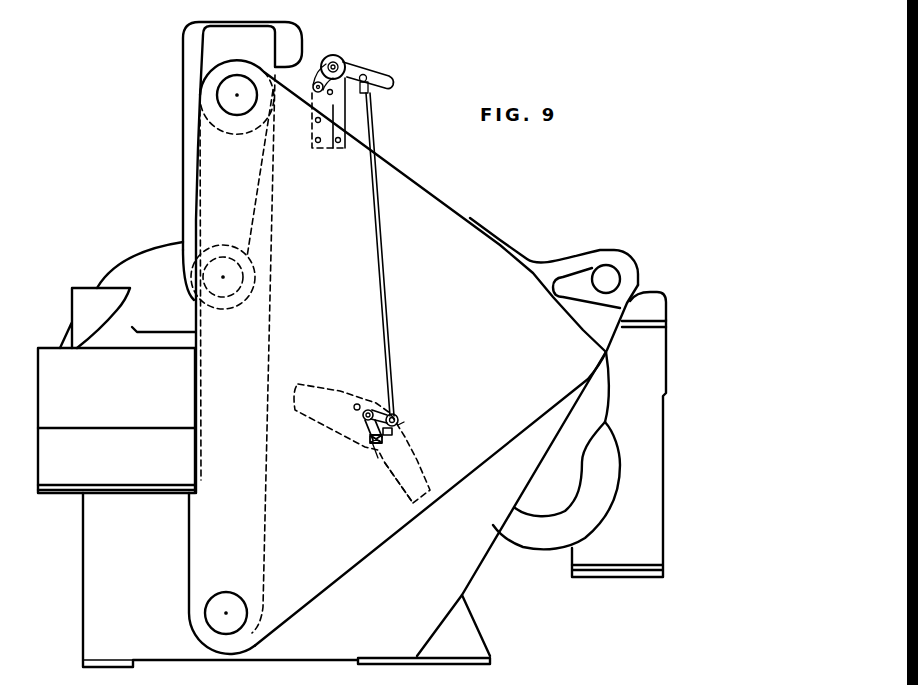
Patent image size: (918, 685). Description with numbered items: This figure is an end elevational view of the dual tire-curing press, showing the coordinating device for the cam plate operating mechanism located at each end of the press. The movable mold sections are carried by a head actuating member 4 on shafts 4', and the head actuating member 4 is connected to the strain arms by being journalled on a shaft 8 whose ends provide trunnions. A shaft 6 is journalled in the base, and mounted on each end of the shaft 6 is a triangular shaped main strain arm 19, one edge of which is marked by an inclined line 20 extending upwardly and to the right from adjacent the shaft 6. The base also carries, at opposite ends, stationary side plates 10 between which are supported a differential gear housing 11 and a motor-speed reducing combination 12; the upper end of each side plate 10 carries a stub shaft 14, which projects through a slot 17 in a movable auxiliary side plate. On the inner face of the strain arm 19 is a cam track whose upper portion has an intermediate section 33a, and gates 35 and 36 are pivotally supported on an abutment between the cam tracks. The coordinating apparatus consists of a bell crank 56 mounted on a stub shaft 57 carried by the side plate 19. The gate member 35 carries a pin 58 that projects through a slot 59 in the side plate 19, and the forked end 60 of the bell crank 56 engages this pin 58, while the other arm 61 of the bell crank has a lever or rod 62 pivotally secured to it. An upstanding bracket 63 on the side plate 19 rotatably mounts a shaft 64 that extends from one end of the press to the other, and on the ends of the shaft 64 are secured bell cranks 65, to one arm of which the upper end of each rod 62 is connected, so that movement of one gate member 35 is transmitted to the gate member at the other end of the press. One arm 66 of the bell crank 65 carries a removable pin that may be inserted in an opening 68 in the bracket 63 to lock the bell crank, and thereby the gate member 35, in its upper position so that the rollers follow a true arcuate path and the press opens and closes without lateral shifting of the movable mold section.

The head actuating member 4 is at (227, 338).
The shaft 8 is at (227, 98).
The shafts 4' is at (188, 259).
The shaft 6 is at (207, 608).
The inclined line 20 is at (192, 378).
The main strain arm 19 is at (405, 193).
The slot 17 is at (571, 283).
The stub shaft 14 is at (610, 273).
The stationary side plates 10 is at (467, 562).
The differential gear housing 11 is at (547, 542).
The motor-speed reducing combination 12 is at (647, 542).
The lever 62 is at (382, 257).
The shaft 64 is at (338, 59).
The arm 66 is at (321, 66).
The bell cranks 65 is at (378, 80).
The opening 68 is at (333, 93).
The bracket 63 is at (328, 124).
The gate 36 is at (353, 405).
The bell crank 56 is at (372, 410).
The arm 61 is at (395, 417).
The intermediate section 33a is at (402, 423).
The stub shaft 57 is at (365, 420).
The slot 59 is at (392, 432).
The forked end 60 is at (385, 436).
The pin 58 is at (375, 458).
The gate member 35 is at (382, 490).